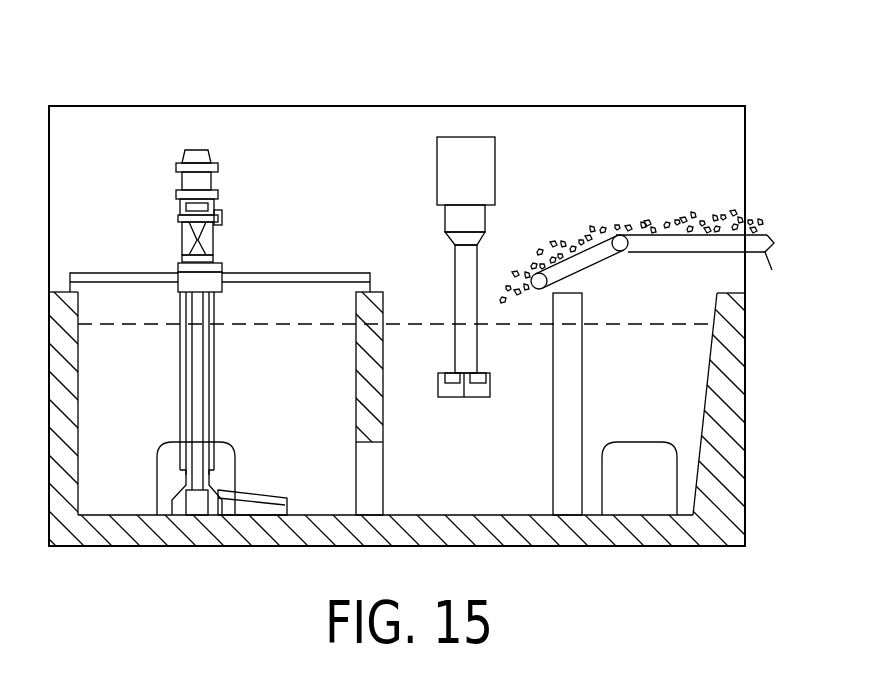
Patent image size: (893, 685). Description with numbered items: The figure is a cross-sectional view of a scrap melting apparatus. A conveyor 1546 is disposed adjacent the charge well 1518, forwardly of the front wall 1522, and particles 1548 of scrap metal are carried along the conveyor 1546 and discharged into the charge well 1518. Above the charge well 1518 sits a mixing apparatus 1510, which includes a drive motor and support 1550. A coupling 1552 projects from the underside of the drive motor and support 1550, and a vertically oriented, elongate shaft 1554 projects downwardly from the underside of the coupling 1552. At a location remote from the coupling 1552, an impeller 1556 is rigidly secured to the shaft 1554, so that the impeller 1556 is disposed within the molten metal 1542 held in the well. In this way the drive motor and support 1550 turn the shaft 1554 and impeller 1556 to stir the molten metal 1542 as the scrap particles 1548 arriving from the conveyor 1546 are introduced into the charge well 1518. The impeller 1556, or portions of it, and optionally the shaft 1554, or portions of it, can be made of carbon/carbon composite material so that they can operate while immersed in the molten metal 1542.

The mixing apparatus 1510 is at (661, 80).
The front wall 1522 is at (308, 192).
The charge well 1518 is at (463, 286).
The drive motor and support 1550 is at (447, 162).
The coupling 1552 is at (478, 222).
The shaft 1554 is at (462, 287).
The impeller 1556 is at (477, 390).
The molten metal 1542 is at (545, 358).
The conveyor 1546 is at (703, 198).
The particles 1548 is at (560, 243).